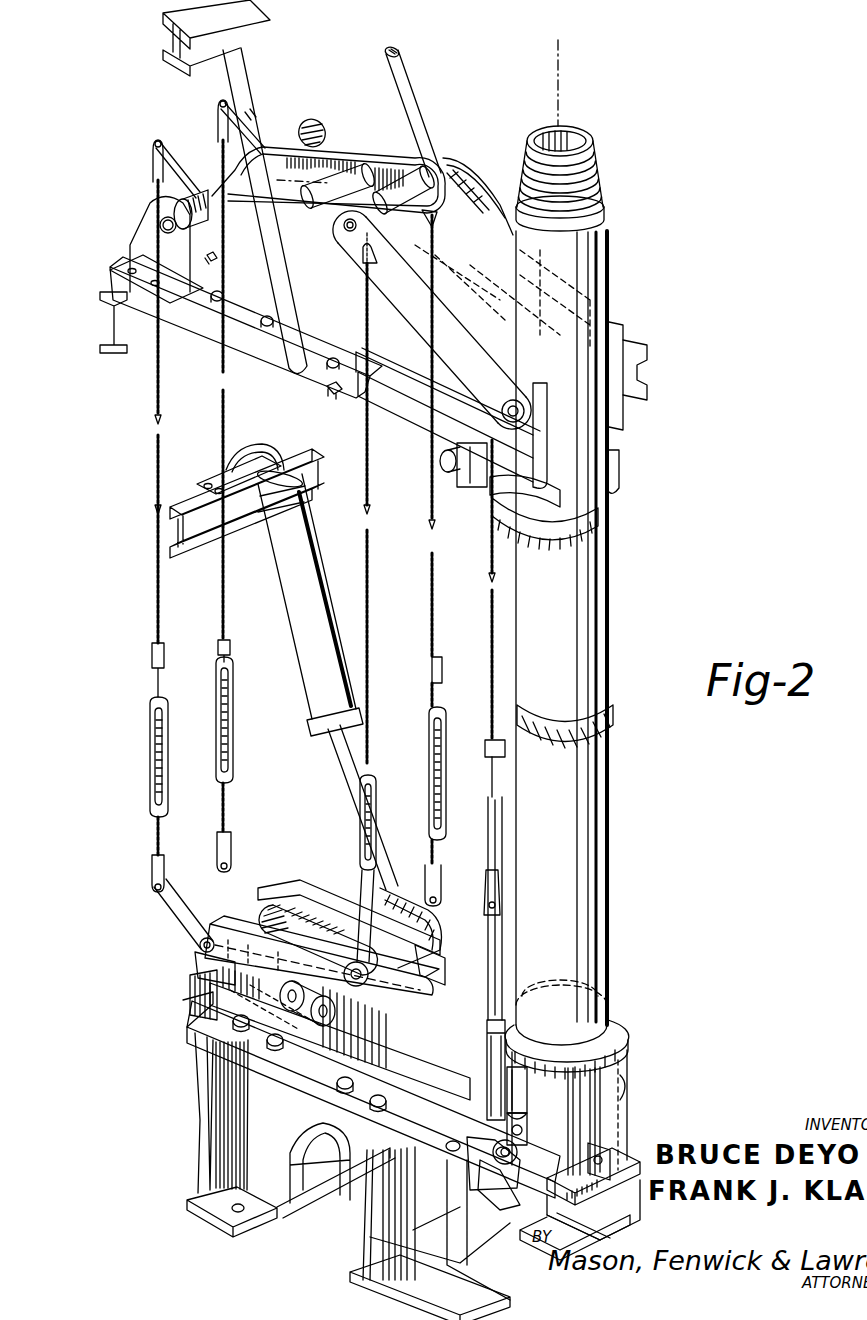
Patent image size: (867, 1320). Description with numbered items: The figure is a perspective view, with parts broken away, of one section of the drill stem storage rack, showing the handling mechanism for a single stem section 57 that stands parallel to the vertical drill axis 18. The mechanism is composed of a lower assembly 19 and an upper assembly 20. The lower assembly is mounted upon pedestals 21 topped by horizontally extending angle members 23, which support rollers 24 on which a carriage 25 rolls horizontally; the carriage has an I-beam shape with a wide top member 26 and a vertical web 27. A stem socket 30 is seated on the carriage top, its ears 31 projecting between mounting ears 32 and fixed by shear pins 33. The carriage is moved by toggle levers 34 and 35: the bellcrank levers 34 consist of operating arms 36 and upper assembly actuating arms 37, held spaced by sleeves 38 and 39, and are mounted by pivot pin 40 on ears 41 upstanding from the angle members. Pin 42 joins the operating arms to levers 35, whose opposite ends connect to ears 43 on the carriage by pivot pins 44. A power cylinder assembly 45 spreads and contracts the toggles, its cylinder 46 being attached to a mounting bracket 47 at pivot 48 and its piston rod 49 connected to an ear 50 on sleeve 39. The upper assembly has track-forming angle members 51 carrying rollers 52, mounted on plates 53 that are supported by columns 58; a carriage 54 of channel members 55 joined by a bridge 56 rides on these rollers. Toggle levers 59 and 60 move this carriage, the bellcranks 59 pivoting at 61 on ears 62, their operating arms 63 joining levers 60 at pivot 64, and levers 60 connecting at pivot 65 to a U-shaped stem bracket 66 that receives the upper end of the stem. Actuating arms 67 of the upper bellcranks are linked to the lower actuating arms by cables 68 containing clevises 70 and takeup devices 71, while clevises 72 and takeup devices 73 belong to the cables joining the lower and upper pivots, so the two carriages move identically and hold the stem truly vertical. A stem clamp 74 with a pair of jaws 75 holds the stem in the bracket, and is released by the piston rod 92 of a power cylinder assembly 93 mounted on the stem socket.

The drill axis 18 is at (560, 62).
The lower assembly 19 is at (298, 867).
The upper assembly 20 is at (459, 156).
The pedestals 21 is at (250, 1130).
The angle members 23 is at (320, 1070).
The rollers 24 is at (395, 1030).
The carriage 25 is at (646, 1128).
The top member 26 is at (643, 1157).
The vertical web 27 is at (548, 1217).
The stem socket 30 is at (613, 1067).
The ears 31 is at (637, 1133).
The mounting ears 32 is at (597, 1167).
The shear pins 33 is at (621, 1138).
The toggle levers 34 is at (320, 870).
The toggle levers 35 is at (480, 945).
The operating arms 36 is at (337, 897).
The upper assembly actuating arms 37 is at (230, 872).
The sleeve 38 is at (247, 913).
The sleeve 39 is at (418, 965).
The pivot pin 40 is at (200, 947).
The ears 41 is at (198, 970).
The pin 42 is at (372, 988).
The ears 43 is at (530, 1113).
The pivot pins 44 is at (492, 1167).
The power cylinder assembly 45 is at (275, 593).
The cylinder 46 is at (318, 545).
The mounting bracket 47 is at (212, 480).
The pivot 48 is at (262, 450).
The piston rod 49 is at (338, 747).
The ear 50 is at (403, 912).
The angle members 51 is at (253, 313).
The rollers 52 is at (200, 253).
The plates 53 is at (207, 313).
The carriage 54 is at (389, 341).
The channel members 55 is at (460, 383).
The bridge 56 is at (440, 440).
The stem section 57 is at (609, 230).
The columns 58 is at (244, 60).
The toggle levers 59 is at (340, 147).
The toggle levers 60 is at (497, 200).
The pivot 61 is at (160, 220).
The ears 62 is at (143, 240).
The operating arms 63 is at (357, 157).
The pivot 64 is at (337, 227).
The pivot 65 is at (513, 400).
The U-shaped stem bracket 66 is at (627, 347).
The actuating arms 67 is at (197, 150).
The cables 68 is at (220, 427).
The clevises 70 is at (210, 110).
The takeup devices 71 is at (173, 730).
The clevises 72 is at (435, 862).
The takeup devices 73 is at (427, 740).
The stem clamp 74 is at (486, 515).
The jaws 75 is at (619, 481).
The piston rod 92 is at (487, 1005).
The power cylinder assembly 93 is at (487, 1062).